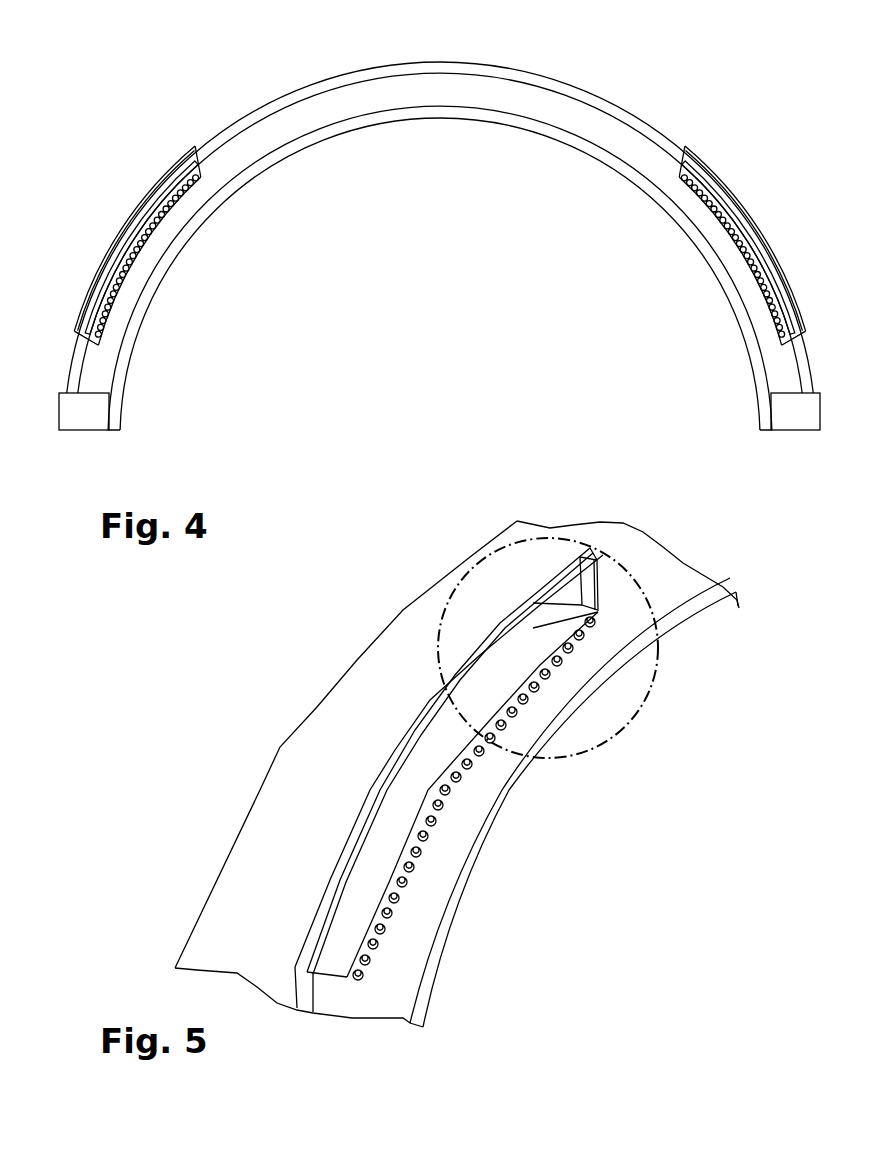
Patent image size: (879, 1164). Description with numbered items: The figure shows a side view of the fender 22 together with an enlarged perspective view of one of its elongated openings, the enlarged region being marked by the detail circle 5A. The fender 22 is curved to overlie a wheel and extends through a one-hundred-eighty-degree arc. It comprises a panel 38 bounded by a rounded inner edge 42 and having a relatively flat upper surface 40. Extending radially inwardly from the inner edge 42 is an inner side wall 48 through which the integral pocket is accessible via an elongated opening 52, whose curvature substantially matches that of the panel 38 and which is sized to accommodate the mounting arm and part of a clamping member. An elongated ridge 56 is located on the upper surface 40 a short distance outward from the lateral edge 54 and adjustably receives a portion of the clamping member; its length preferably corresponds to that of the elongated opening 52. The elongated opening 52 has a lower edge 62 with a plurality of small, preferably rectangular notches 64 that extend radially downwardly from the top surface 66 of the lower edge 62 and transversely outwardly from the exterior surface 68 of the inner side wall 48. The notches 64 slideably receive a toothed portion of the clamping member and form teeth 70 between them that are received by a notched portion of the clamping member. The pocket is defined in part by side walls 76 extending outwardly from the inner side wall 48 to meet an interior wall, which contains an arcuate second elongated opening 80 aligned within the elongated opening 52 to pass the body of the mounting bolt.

In FIG. 4, the fender 22 is at (635, 105).
In FIG. 5, the fender 22 is at (290, 735).
In FIG. 4, the panel 38 is at (557, 78).
In FIG. 5, the panel 38 is at (340, 725).
In FIG. 4, the upper surface 40 is at (593, 92).
In FIG. 5, the upper surface 40 is at (225, 935).
In FIG. 4, the inner edge 42 is at (265, 112).
In FIG. 5, the inner edge 42 is at (630, 535).
In FIG. 4, the inner side wall 48 is at (328, 110).
In FIG. 5, the inner side wall 48 is at (683, 587).
In FIG. 4, the elongated opening 52 is at (150, 197).
In FIG. 5, the elongated opening 52 is at (394, 836).
In FIG. 4, the lateral edge 54 is at (172, 168).
In FIG. 5, the lateral edge 54 is at (552, 585).
In FIG. 4, the elongated ridge 56 is at (185, 150).
In FIG. 5, the elongated ridge 56 is at (518, 598).
In FIG. 4, the lower edge 62 is at (125, 277).
In FIG. 5, the lower edge 62 is at (478, 765).
In FIG. 5, the notches 64 is at (387, 973).
In FIG. 5, the top surface 66 is at (593, 620).
In FIG. 5, the exterior surface 68 is at (652, 578).
In FIG. 5, the teeth 70 is at (403, 897).
In FIG. 5, the side walls 76 is at (583, 585).
In FIG. 4, the second elongated opening 80 is at (132, 242).
In FIG. 5, the detail circle 5A is at (624, 732).